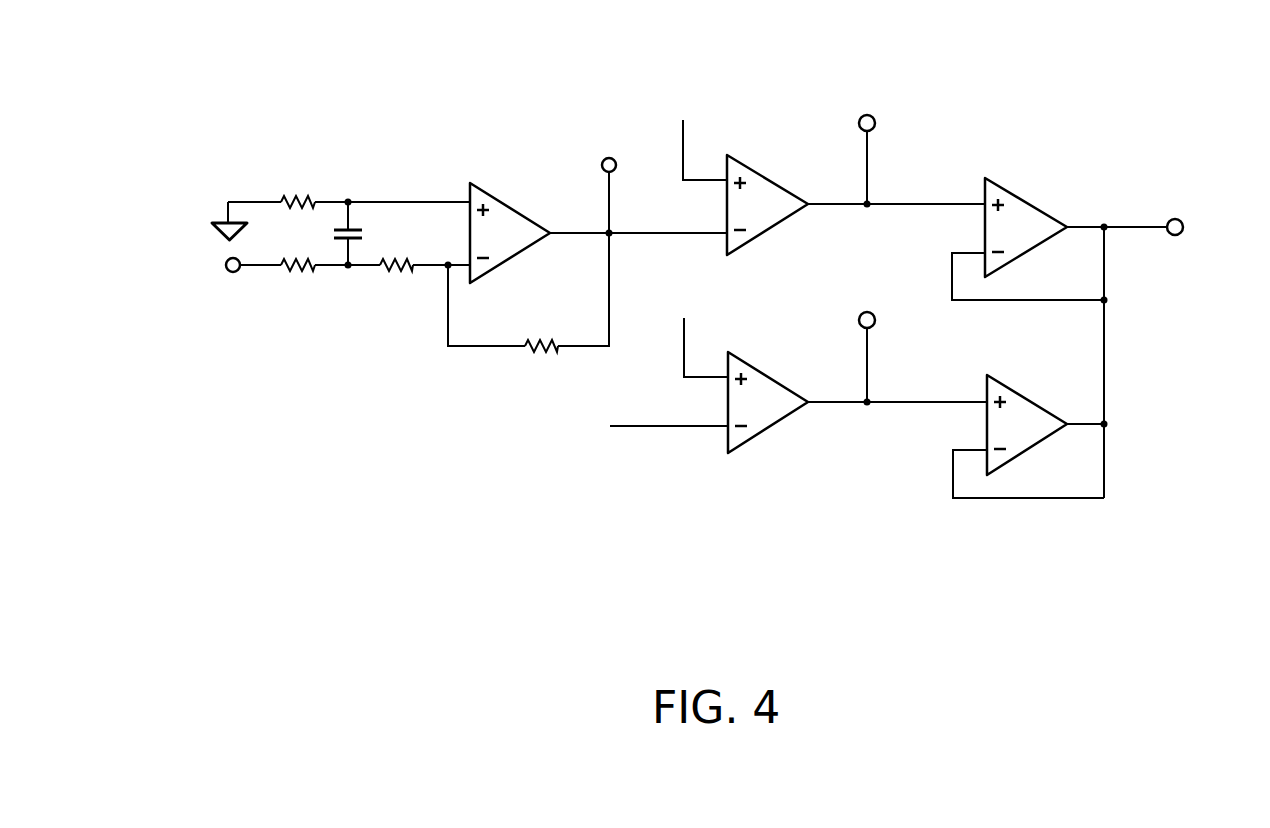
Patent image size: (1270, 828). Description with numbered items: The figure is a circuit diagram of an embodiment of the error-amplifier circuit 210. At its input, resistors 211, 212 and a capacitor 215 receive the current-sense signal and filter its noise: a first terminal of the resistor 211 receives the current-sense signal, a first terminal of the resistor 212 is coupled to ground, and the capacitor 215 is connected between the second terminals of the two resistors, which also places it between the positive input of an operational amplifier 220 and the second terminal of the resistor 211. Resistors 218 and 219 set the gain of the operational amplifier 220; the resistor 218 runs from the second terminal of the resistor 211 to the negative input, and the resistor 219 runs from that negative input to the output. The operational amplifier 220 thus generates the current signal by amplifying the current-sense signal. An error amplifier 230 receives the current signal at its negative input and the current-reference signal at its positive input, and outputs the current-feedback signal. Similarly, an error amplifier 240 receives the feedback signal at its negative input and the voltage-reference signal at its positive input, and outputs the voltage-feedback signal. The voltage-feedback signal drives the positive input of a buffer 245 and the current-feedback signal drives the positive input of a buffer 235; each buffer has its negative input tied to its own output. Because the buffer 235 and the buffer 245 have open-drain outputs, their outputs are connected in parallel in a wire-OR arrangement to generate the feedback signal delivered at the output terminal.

The error-amplifier circuit 210 is at (1163, 58).
The resistor 211 is at (297, 283).
The resistor 212 is at (297, 188).
The capacitor 215 is at (371, 235).
The resistor 218 is at (397, 283).
The resistor 219 is at (542, 330).
The operational amplifier 220 is at (511, 231).
The error amplifier 230 is at (770, 205).
The buffer 235 is at (1026, 225).
The error amplifier 240 is at (771, 402).
The buffer 245 is at (1027, 423).